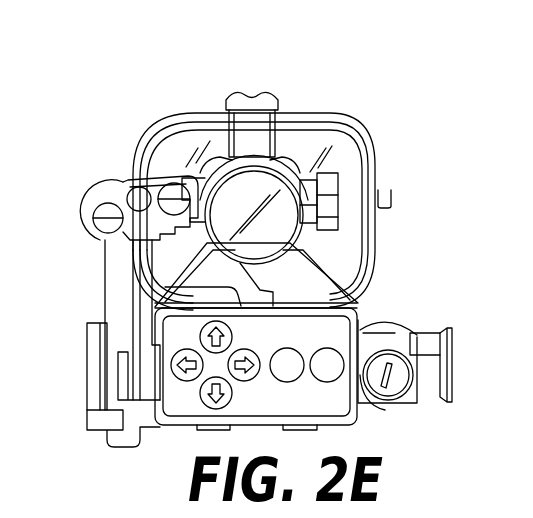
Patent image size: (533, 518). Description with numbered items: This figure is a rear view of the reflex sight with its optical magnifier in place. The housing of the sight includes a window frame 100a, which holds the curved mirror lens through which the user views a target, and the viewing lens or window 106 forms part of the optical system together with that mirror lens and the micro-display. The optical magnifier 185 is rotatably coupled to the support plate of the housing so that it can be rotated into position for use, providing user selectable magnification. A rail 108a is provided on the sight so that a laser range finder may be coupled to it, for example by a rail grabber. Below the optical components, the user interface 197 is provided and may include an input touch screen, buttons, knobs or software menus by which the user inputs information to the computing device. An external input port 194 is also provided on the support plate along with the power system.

The window frame 100a is at (347, 128).
The viewing lens 106 is at (315, 150).
The rail 108a is at (272, 88).
The optical magnifier 185 is at (283, 207).
The external input port 194 is at (150, 388).
The user interface 197 is at (347, 320).